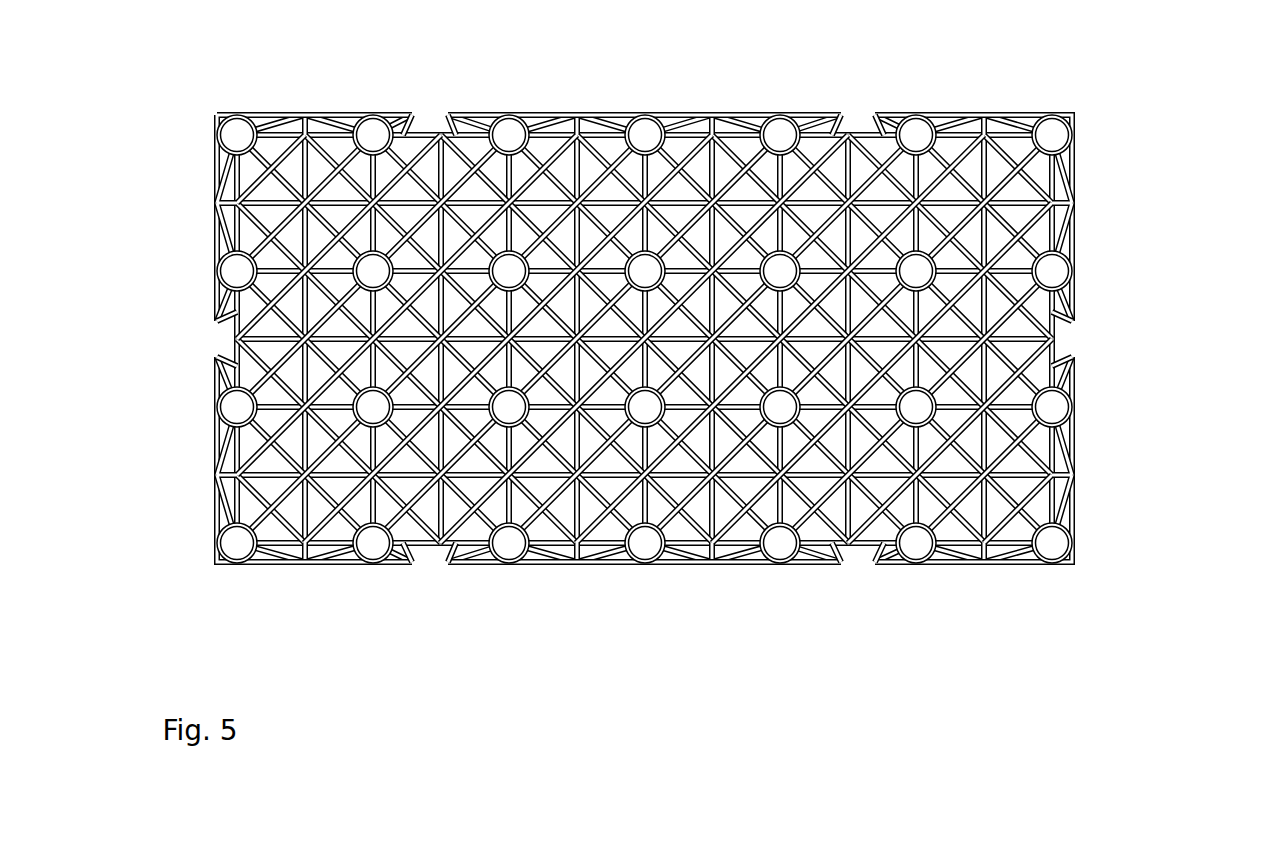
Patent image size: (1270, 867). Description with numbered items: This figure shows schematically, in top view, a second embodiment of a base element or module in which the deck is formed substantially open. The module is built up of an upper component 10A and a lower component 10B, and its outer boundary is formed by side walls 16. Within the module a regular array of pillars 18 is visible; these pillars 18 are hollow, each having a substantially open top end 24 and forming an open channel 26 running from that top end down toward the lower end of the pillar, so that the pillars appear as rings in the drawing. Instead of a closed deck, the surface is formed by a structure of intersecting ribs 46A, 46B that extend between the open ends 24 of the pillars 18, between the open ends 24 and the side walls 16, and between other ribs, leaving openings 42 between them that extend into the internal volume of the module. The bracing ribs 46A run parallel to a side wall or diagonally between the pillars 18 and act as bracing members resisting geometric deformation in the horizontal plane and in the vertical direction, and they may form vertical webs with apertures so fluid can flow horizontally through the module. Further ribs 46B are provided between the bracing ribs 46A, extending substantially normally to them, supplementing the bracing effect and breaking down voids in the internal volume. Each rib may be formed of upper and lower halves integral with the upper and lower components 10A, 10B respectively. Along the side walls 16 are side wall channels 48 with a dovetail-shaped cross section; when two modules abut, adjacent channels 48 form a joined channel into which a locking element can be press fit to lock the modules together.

The upper component 10A is at (692, 340).
The lower component 10B is at (692, 340).
The side wall 16 is at (745, 113).
The pillar 18 is at (347, 114).
The open top end 24 is at (915, 135).
The open channel 26 is at (508, 128).
The opening 42 is at (492, 170).
The bracing rib 46A is at (1053, 178).
The further rib 46B is at (609, 200).
The side wall channel 48 is at (430, 122).